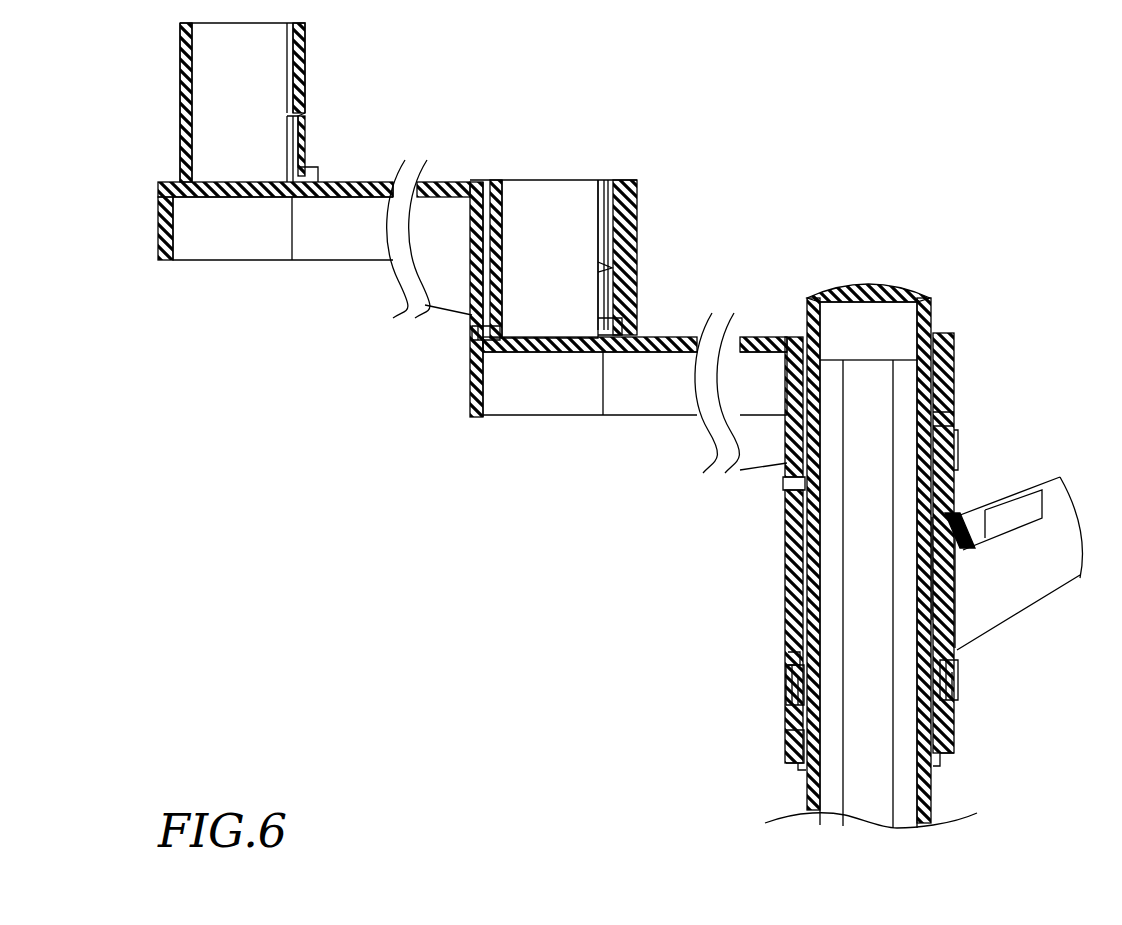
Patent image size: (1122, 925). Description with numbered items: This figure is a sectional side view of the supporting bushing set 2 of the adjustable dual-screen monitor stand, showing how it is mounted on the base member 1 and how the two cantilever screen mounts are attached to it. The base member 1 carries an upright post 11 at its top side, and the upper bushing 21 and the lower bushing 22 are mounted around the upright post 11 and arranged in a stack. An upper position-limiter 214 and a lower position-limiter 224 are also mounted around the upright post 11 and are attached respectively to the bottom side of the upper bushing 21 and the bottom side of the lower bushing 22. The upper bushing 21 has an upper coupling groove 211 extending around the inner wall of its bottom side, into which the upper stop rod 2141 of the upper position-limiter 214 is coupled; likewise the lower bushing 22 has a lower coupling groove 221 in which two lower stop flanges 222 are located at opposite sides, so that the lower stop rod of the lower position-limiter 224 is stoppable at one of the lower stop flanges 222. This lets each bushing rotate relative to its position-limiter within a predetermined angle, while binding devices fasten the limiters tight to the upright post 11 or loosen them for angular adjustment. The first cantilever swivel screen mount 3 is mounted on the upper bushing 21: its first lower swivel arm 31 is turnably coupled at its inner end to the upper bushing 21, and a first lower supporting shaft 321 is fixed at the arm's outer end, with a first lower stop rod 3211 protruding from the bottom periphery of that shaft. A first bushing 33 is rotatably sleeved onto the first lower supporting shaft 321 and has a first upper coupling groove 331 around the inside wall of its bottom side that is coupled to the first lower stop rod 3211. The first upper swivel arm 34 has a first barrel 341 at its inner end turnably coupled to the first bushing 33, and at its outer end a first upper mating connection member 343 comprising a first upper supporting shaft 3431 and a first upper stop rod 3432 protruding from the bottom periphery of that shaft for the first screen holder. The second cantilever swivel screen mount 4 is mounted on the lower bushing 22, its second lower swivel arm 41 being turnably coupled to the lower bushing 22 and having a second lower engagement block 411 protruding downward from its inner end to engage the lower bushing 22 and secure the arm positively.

The base member 1 is at (915, 565).
The upright post 11 is at (1006, 774).
The supporting bushing set 2 is at (895, 553).
The upper bushing 21 is at (950, 357).
The upper coupling groove 211 is at (946, 455).
The upper position-limiter 214 is at (945, 492).
The upper stop rod 2141 is at (953, 420).
The lower bushing 22 is at (936, 607).
The lower coupling groove 221 is at (950, 672).
The lower stop flanges 222 is at (790, 677).
The lower position-limiter 224 is at (800, 738).
The first cantilever swivel screen mount 3 is at (673, 395).
The first lower swivel arm 31 is at (775, 348).
The first bushing 33 is at (614, 223).
The first upper coupling groove 331 is at (478, 334).
The first lower supporting shaft 321 is at (610, 267).
The first lower stop rod 3211 is at (620, 326).
The first upper swivel arm 34 is at (341, 253).
The first barrel 341 is at (478, 250).
The first upper mating connection member 343 is at (313, 48).
The first upper supporting shaft 3431 is at (185, 98).
The first upper stop rod 3432 is at (345, 150).
The second cantilever swivel screen mount 4 is at (904, 620).
The second lower swivel arm 41 is at (795, 596).
The second lower engagement block 411 is at (792, 666).